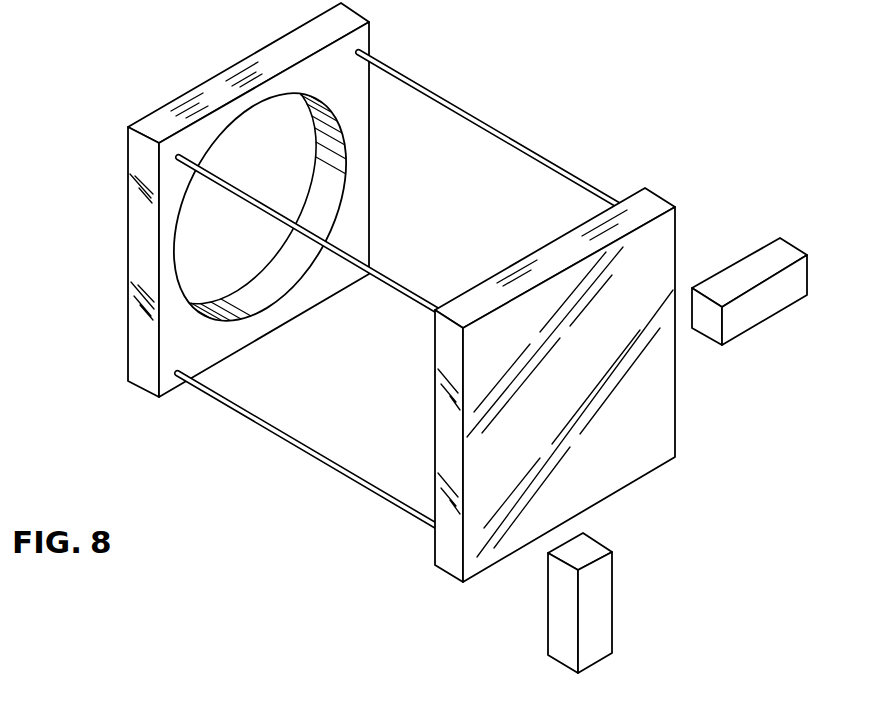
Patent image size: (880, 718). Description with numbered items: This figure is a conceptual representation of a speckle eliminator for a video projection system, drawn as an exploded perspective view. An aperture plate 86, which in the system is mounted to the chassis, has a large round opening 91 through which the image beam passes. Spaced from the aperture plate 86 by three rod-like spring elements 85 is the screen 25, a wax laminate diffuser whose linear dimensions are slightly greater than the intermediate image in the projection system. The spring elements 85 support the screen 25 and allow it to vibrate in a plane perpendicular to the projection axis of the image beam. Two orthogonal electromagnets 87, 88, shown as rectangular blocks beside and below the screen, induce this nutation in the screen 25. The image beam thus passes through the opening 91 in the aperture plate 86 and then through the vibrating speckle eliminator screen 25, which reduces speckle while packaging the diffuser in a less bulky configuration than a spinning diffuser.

The screen 25 is at (677, 427).
The spring elements 85 is at (492, 120).
The aperture plate 86 is at (268, 47).
The electromagnet 87 is at (752, 253).
The electromagnet 88 is at (612, 592).
The opening 91 is at (200, 262).